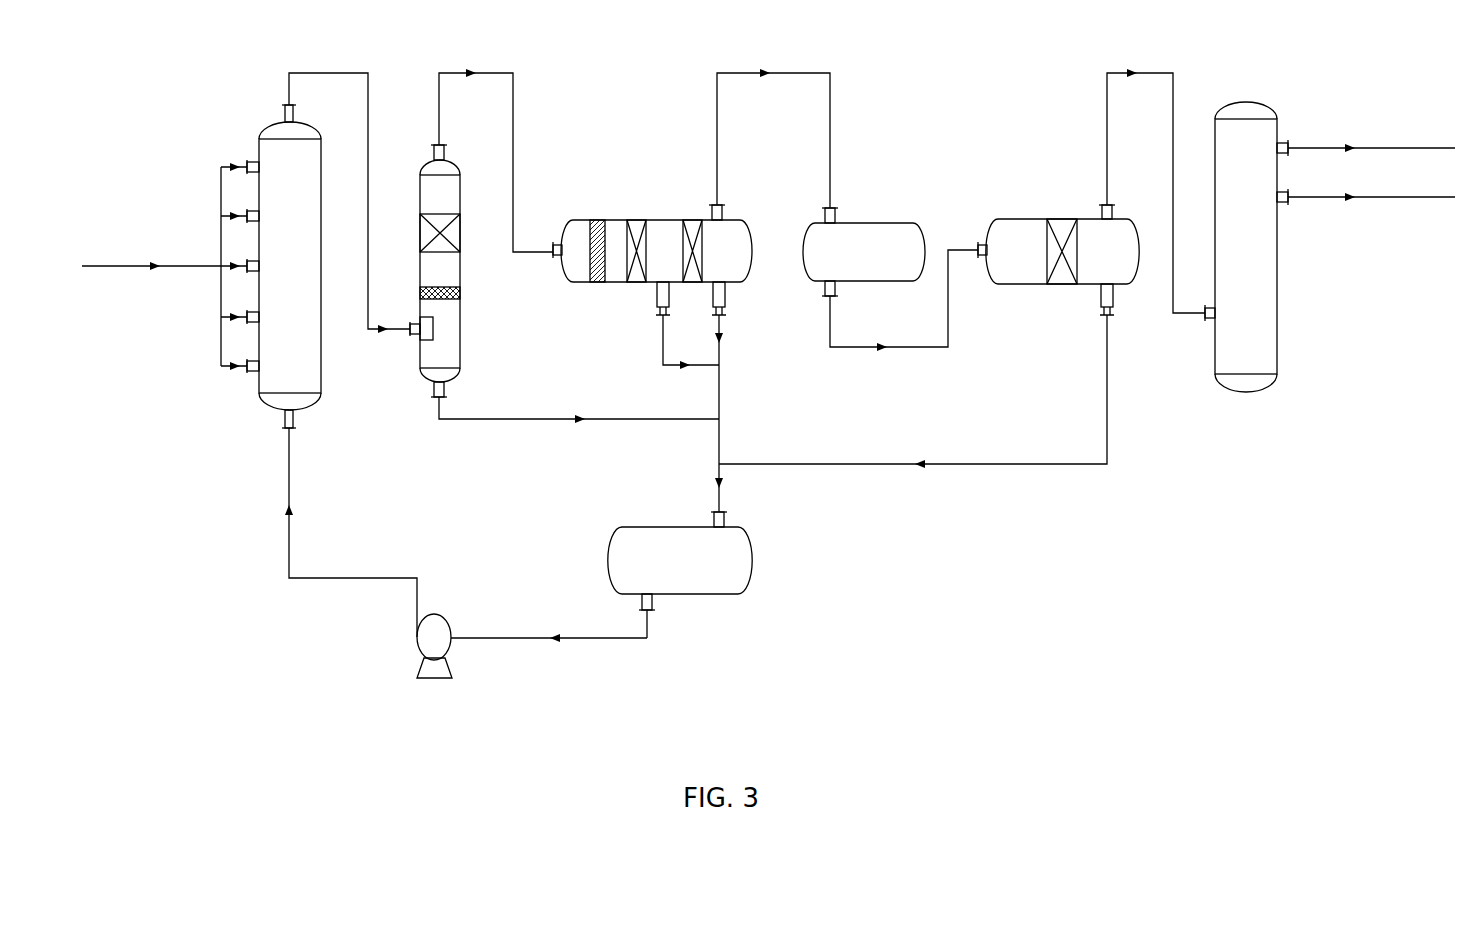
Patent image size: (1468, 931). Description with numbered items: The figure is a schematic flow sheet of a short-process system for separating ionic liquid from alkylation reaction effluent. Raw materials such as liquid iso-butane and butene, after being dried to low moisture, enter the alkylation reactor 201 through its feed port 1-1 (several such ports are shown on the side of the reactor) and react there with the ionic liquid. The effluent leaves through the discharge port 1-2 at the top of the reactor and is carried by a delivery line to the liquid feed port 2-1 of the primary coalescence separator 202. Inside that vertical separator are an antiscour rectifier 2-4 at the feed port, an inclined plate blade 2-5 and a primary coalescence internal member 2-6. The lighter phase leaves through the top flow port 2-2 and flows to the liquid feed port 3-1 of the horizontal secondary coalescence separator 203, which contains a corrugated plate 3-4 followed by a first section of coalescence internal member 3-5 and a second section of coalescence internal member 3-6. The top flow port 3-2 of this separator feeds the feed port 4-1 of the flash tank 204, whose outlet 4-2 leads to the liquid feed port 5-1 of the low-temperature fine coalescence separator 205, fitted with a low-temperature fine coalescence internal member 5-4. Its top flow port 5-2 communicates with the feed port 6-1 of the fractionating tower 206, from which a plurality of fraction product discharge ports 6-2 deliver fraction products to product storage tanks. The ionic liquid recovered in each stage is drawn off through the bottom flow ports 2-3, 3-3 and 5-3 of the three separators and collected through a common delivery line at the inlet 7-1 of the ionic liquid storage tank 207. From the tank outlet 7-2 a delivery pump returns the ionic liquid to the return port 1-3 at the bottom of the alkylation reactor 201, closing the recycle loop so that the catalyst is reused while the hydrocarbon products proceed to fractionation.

The alkylation reactor 201 is at (290, 266).
The feed port 1-1 is at (257, 162).
The effluent discharge port 1-2 is at (293, 113).
The ionic liquid return port 1-3 is at (293, 418).
The primary coalescence separator 202 is at (440, 271).
The liquid feed port 2-1 is at (415, 333).
The top flow port 2-2 is at (445, 153).
The bottom flow port 2-3 is at (445, 389).
The antiscour rectifier 2-4 is at (425, 317).
The inclined plate blade 2-5 is at (455, 290).
The primary coalescence internal member 2-6 is at (452, 237).
The secondary coalescence separator 203 is at (656, 251).
The liquid feed port 3-1 is at (557, 262).
The top flow port 3-2 is at (725, 210).
The bottom flow port 3-3 is at (716, 318).
The corrugated plate 3-4 is at (597, 218).
The first section of coalescence internal member 3-5 is at (637, 218).
The second section of coalescence internal member 3-6 is at (692, 218).
The flash tank 204 is at (864, 252).
The feed port 4-1 is at (835, 217).
The outlet 4-2 is at (835, 288).
The low-temperature fine coalescence separator 205 is at (1062, 251).
The liquid feed port 5-1 is at (980, 240).
The top flow port 5-2 is at (1112, 215).
The bottom flow port 5-3 is at (1112, 315).
The low-temperature fine coalescence internal member 5-4 is at (1060, 278).
The fractionating tower 206 is at (1246, 247).
The feed port 6-1 is at (1206, 320).
The fraction product discharge ports 6-2 is at (1279, 202).
The ionic liquid storage tank 207 is at (680, 560).
The inlet 7-1 is at (725, 522).
The outlet 7-2 is at (652, 598).